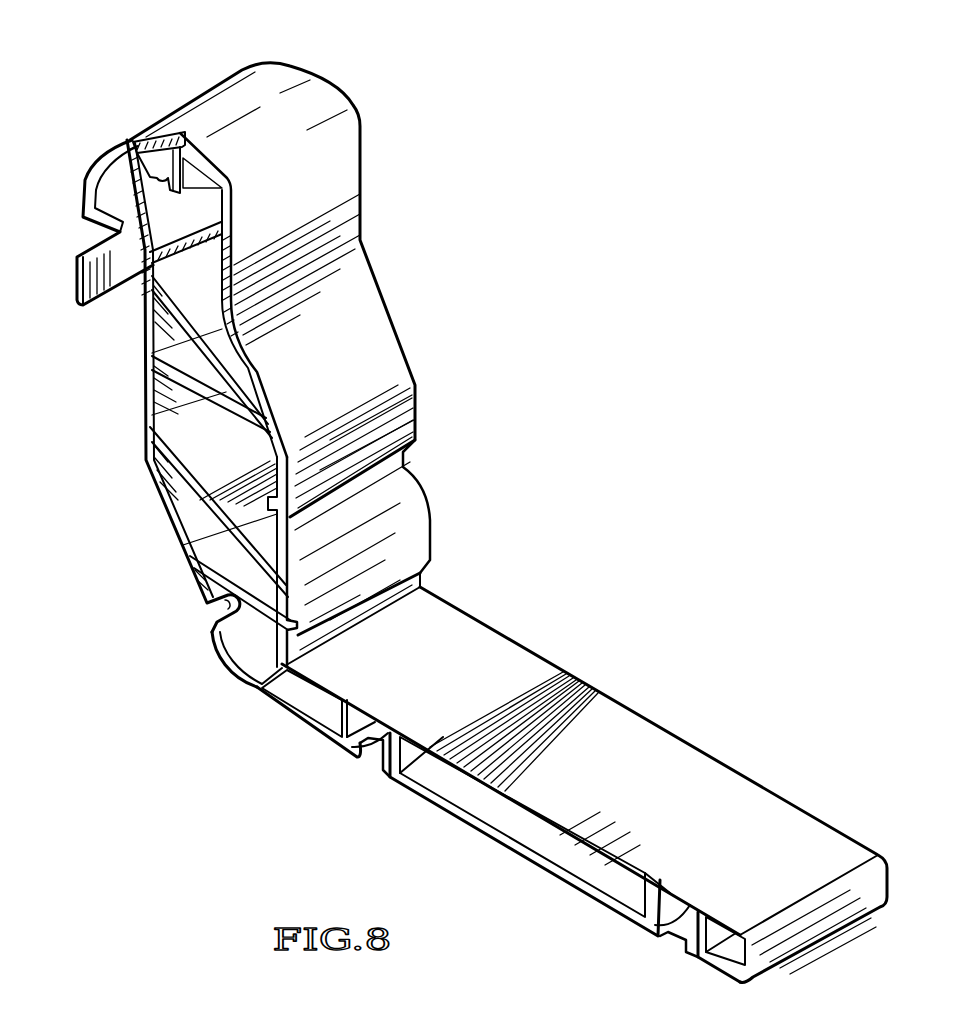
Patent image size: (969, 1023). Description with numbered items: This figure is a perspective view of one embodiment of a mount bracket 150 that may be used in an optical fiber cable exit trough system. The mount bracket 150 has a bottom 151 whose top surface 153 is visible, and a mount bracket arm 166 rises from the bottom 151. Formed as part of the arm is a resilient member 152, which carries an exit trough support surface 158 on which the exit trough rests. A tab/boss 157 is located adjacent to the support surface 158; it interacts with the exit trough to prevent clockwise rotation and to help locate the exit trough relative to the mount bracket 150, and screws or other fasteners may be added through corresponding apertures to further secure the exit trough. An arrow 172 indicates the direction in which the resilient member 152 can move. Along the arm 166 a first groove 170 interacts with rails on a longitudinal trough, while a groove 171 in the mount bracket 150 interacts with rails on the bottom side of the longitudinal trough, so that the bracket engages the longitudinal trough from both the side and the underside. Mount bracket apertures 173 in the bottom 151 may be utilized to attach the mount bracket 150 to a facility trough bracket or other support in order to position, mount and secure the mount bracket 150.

The mount bracket 150 is at (612, 515).
The bottom 151 is at (509, 818).
The resilient member 152 is at (85, 168).
The top surface 153 is at (660, 802).
The tab/boss 157 is at (165, 160).
The exit trough support surface 158 is at (322, 102).
The mount bracket arm 166 is at (510, 588).
The first groove 170 is at (380, 473).
The groove 171 is at (383, 598).
The arrow 172 is at (127, 341).
The mount bracket apertures 173 is at (378, 757).